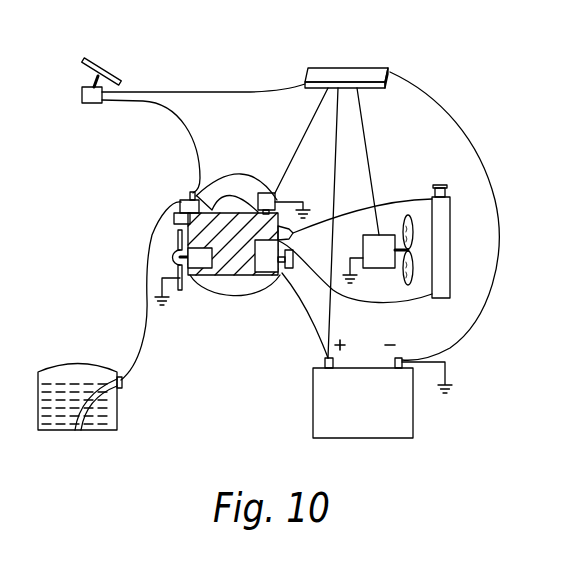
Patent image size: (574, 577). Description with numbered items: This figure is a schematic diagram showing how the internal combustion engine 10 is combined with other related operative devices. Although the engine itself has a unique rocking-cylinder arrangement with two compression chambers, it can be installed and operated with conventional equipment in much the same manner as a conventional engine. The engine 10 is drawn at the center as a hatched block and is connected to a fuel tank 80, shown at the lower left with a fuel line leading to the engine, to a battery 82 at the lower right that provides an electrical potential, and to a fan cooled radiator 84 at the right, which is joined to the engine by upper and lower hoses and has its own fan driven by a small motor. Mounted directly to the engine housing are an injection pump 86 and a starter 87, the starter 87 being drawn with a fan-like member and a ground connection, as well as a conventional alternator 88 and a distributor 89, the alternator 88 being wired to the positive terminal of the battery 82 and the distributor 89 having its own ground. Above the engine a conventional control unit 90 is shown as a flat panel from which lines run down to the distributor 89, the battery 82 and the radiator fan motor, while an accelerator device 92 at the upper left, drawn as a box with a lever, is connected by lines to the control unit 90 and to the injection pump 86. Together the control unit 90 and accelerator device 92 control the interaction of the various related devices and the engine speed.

The internal combustion engine 10 is at (228, 278).
The fuel tank 80 is at (120, 405).
The battery 82 is at (405, 407).
The fan cooled radiator 84 is at (446, 226).
The injection pump 86 is at (186, 199).
The starter 87 is at (170, 259).
The alternator 88 is at (265, 258).
The distributor 89 is at (284, 190).
The control unit 90 is at (356, 72).
The accelerator device 92 is at (90, 106).